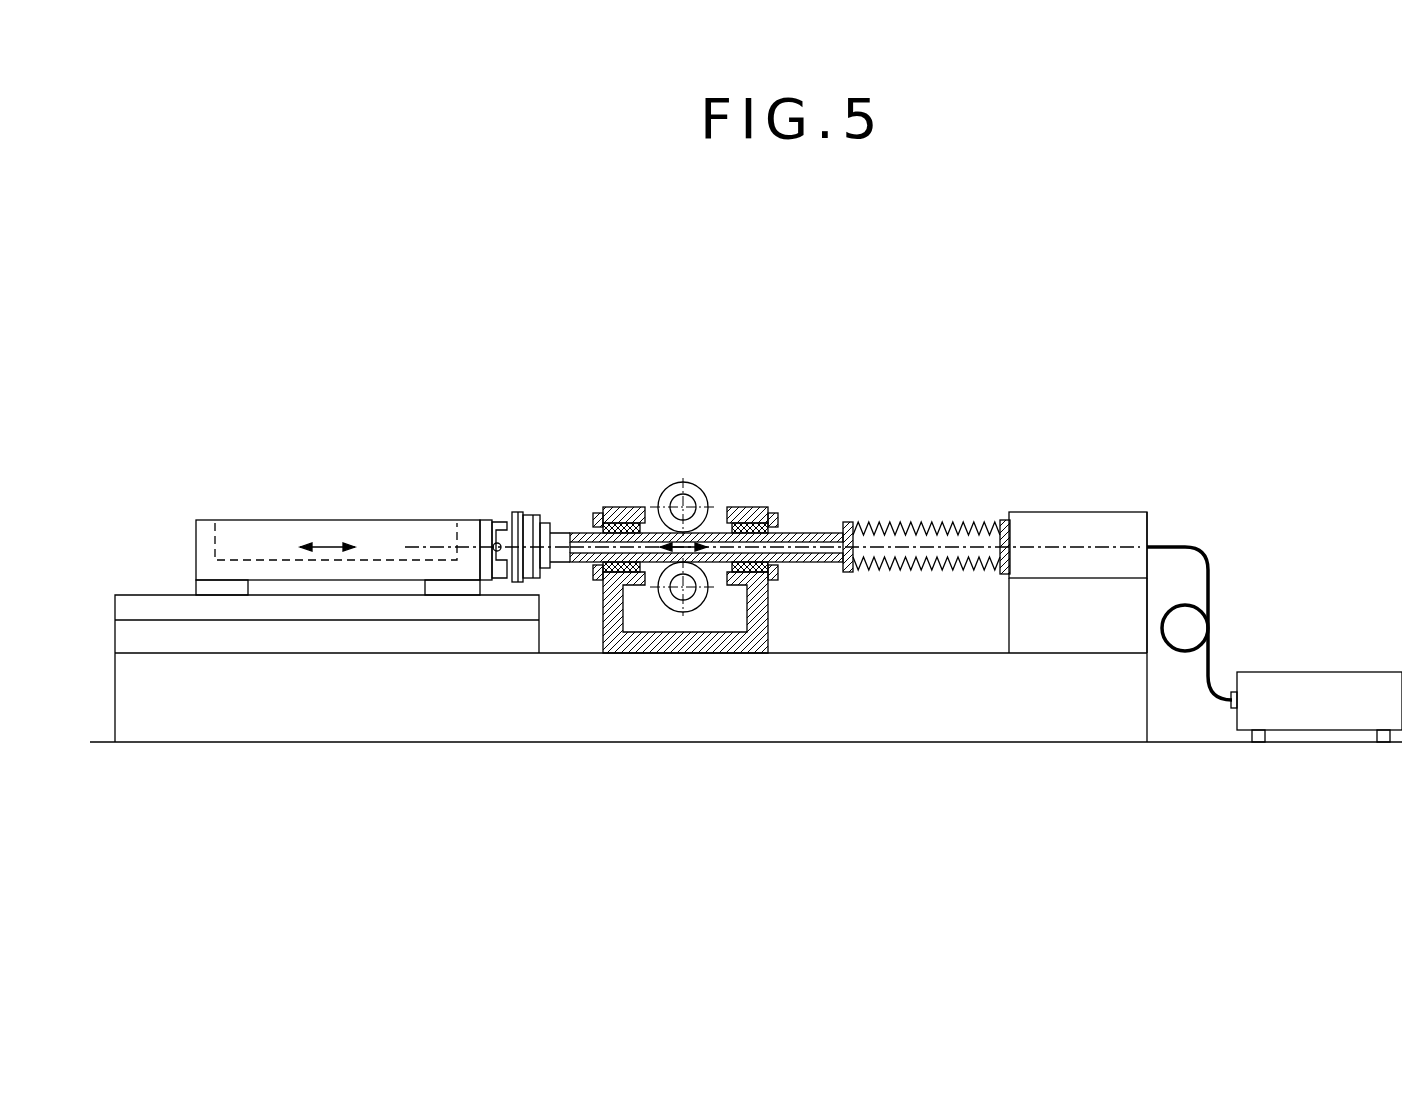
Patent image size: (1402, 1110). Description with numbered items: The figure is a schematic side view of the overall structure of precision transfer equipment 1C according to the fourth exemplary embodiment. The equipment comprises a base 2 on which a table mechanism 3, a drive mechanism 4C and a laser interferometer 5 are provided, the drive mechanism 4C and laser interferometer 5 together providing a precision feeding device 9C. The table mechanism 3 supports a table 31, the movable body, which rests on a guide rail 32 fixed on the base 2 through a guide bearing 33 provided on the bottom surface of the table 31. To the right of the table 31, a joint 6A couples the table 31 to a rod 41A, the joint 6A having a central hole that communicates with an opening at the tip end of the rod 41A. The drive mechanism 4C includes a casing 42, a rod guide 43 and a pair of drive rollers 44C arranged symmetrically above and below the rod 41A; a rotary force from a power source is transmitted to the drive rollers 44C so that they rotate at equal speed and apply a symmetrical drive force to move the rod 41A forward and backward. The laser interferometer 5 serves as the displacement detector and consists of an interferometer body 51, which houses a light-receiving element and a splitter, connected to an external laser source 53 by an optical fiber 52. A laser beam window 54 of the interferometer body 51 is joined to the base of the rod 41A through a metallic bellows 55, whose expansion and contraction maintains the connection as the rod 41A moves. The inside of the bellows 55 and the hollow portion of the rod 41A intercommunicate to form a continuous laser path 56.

The precision transfer equipment 1C is at (533, 305).
The base 2 is at (268, 722).
The table mechanism 3 is at (225, 462).
The table 31 is at (280, 520).
The guide rail 32 is at (145, 600).
The guide bearing 33 is at (197, 587).
The drive mechanism 4C is at (747, 460).
The rod 41A is at (583, 532).
The casing 42 is at (768, 612).
The rod guide 43 is at (622, 522).
The drive roller 44C is at (673, 483).
The laser interferometer 5 is at (1097, 445).
The interferometer body 51 is at (1140, 512).
The optical fiber 52 is at (1212, 572).
The laser source 53 is at (1347, 672).
The laser beam window 54 is at (985, 520).
The bellows 55 is at (942, 522).
The laser path 56 is at (894, 556).
The joint 6A is at (520, 463).
The precision feeding device 9C is at (902, 387).